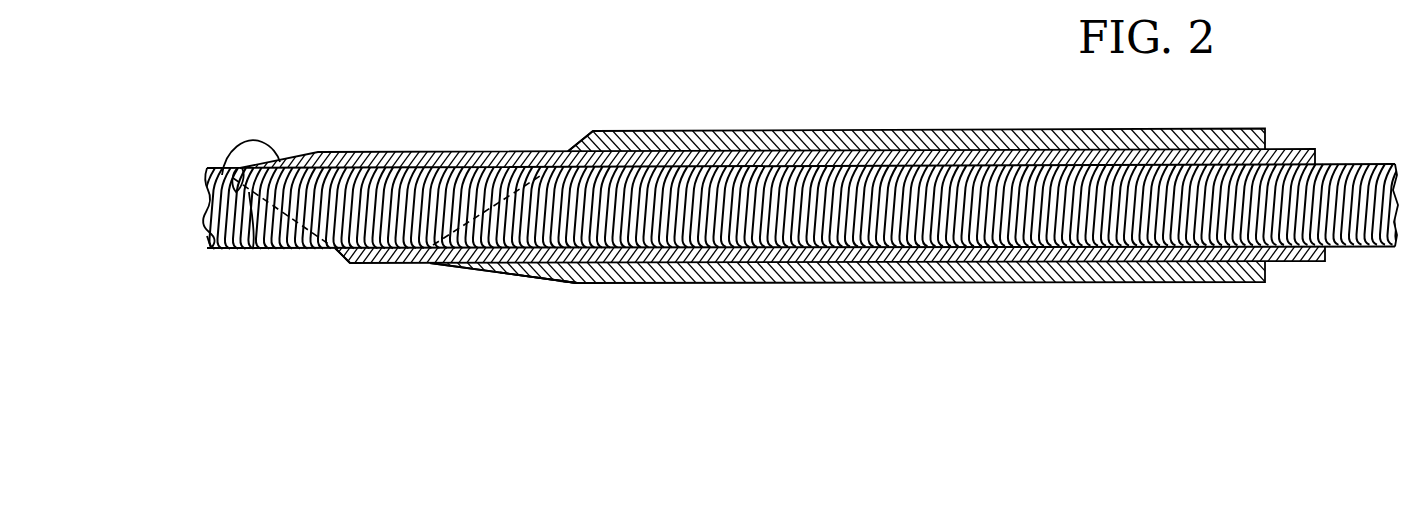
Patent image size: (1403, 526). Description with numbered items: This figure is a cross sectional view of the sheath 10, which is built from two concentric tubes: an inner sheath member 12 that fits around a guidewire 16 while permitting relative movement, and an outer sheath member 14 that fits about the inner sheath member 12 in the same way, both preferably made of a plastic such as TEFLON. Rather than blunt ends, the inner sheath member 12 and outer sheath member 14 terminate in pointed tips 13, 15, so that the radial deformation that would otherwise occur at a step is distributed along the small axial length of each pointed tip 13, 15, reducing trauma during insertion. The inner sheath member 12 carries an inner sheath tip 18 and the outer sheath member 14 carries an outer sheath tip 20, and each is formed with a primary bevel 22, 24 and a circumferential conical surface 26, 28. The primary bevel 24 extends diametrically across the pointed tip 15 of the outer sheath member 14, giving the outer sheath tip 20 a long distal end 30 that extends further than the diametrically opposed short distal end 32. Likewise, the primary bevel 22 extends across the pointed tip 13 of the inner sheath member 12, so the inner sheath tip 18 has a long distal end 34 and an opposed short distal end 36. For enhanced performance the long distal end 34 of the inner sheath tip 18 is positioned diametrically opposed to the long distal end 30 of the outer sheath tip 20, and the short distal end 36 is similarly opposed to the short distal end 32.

The sheath 10 is at (993, 296).
The inner sheath member 12 is at (898, 131).
The pointed tip 13 is at (285, 150).
The outer sheath member 14 is at (762, 286).
The pointed tip 15 is at (468, 283).
The guidewire 16 is at (209, 166).
The inner sheath tip 18 is at (312, 150).
The outer sheath tip 20 is at (543, 288).
The primary bevel 22 is at (335, 251).
The primary bevel 24 is at (590, 130).
The circumferential conical surface 26 is at (220, 250).
The circumferential conical surface 28 is at (508, 281).
The long distal end 30 is at (430, 265).
The short distal end 32 is at (568, 148).
The long distal end 34 is at (253, 250).
The short distal end 36 is at (340, 264).